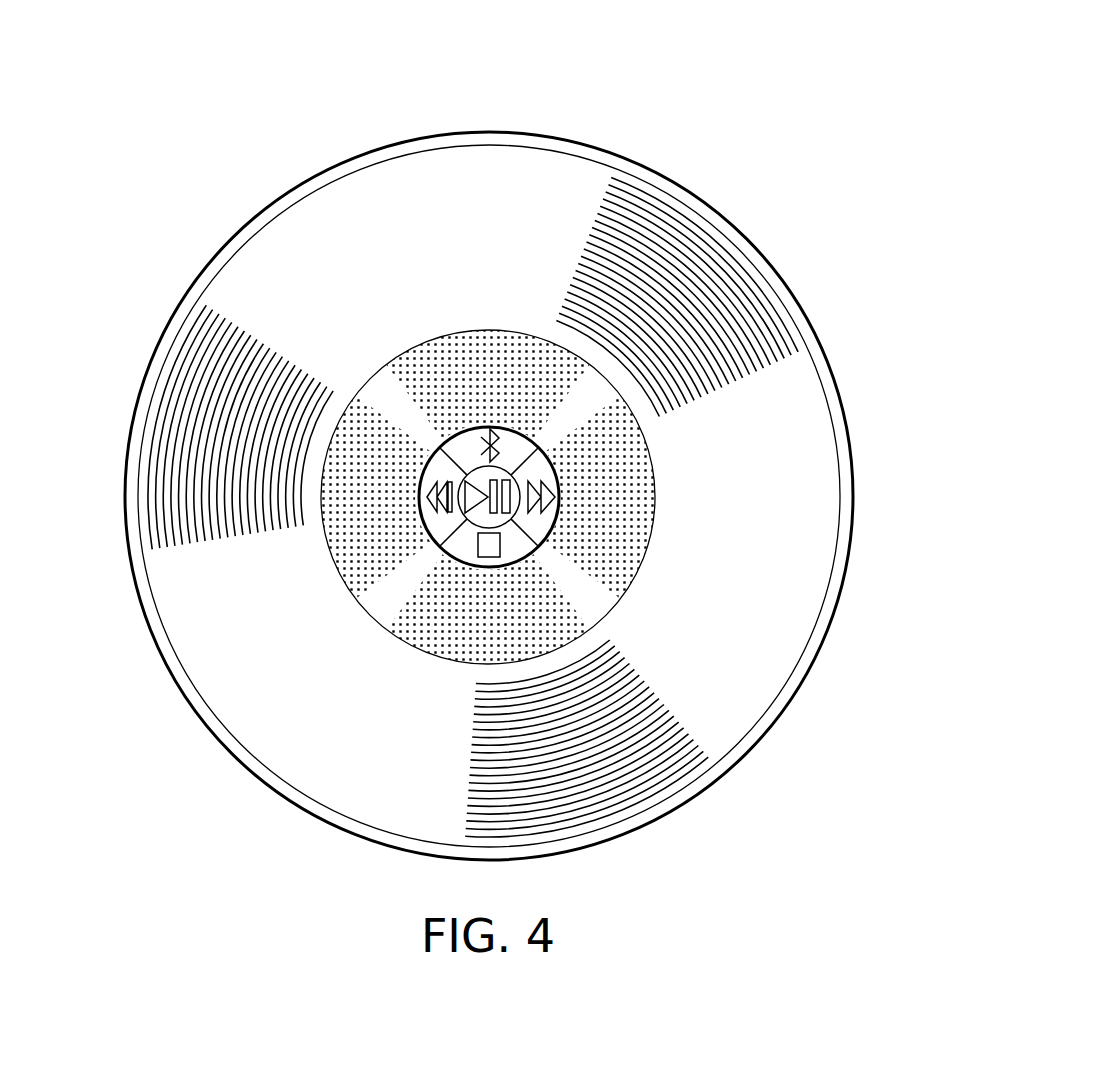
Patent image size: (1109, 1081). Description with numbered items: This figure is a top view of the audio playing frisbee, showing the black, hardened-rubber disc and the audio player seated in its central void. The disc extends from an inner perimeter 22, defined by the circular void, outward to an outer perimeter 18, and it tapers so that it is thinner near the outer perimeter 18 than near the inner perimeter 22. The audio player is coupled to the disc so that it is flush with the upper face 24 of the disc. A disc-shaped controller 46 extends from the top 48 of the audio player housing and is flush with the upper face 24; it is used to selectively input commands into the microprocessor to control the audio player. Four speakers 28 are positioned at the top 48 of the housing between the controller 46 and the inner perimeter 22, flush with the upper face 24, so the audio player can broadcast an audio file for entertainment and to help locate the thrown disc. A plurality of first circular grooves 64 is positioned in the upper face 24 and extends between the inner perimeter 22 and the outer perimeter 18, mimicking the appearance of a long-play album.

The outer perimeter 18 is at (829, 360).
The inner perimeter 22 is at (652, 582).
The upper face 24 is at (750, 557).
The speakers 28 is at (510, 632).
The controller 46 is at (541, 503).
The top 48 is at (605, 613).
The first circular grooves 64 is at (700, 342).